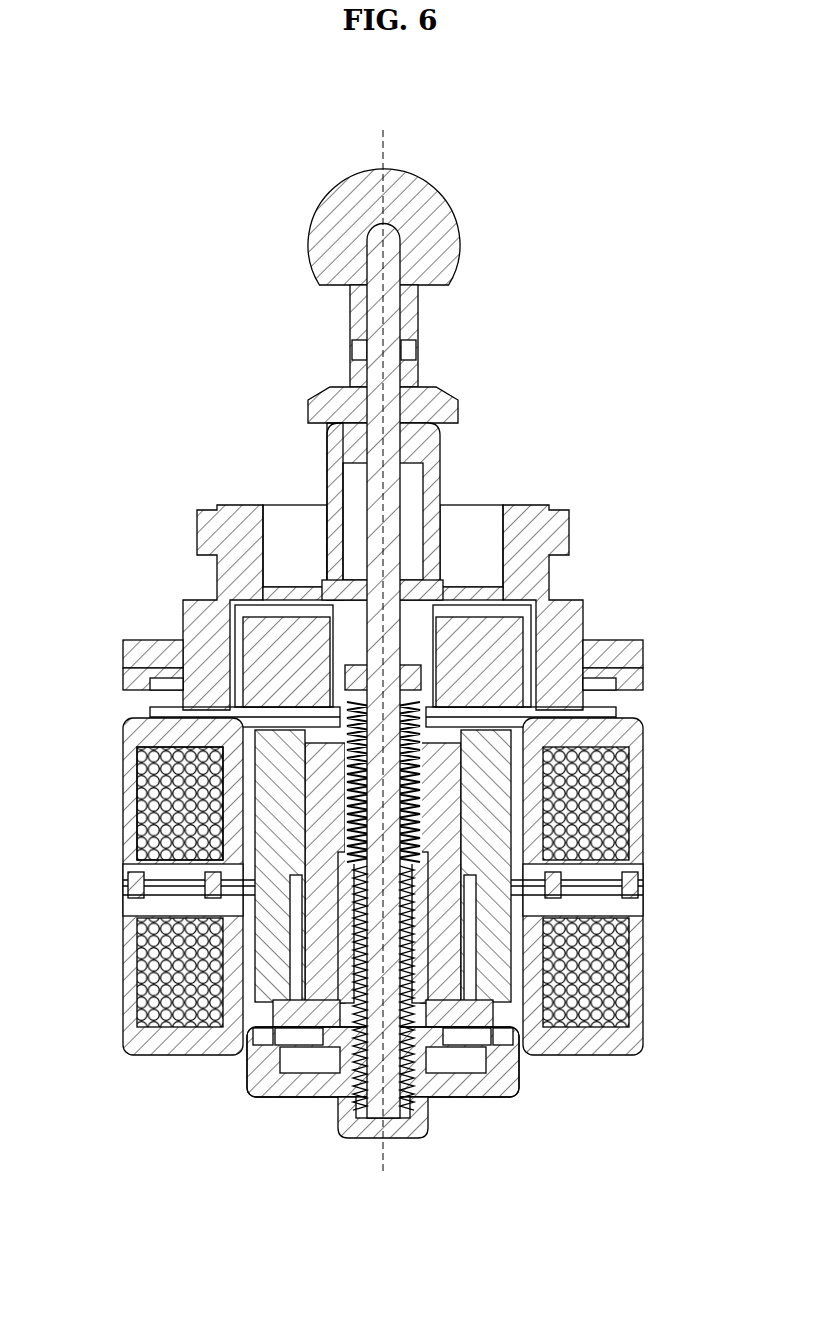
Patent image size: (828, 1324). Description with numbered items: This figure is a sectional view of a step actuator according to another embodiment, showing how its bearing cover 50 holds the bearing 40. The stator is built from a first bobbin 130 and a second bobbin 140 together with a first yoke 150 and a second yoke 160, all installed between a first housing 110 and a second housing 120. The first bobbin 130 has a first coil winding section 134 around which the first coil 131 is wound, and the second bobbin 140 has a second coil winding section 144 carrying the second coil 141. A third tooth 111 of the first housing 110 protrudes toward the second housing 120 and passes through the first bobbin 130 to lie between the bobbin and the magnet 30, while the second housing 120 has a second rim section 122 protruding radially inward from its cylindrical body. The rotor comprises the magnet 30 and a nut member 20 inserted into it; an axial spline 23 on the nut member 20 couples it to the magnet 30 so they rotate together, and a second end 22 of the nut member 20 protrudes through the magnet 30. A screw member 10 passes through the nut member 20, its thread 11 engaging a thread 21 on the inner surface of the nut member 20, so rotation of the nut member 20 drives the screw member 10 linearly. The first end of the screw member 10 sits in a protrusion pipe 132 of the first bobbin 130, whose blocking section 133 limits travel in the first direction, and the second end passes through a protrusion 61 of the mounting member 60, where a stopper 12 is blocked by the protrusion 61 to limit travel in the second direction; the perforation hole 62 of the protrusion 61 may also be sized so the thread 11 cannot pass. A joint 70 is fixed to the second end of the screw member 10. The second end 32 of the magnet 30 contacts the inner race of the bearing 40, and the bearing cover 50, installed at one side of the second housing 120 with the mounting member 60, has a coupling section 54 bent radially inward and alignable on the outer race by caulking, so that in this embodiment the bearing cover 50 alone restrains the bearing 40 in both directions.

The screw member 10 is at (450, 384).
The thread 11 is at (433, 1100).
The stopper 12 is at (345, 675).
The nut member 20 is at (610, 768).
The thread 21 is at (590, 720).
The second end 22 is at (535, 615).
The spline 23 is at (640, 990).
The magnet 30 is at (610, 808).
The second end 32 is at (150, 693).
The bearing 40 is at (170, 640).
The bearing cover 50 is at (600, 642).
The coupling section 54 is at (600, 688).
The mounting member 60 is at (527, 513).
The protrusion 61 is at (427, 447).
The perforation hole 62 is at (330, 440).
The joint 70 is at (325, 278).
The first housing 110 is at (125, 965).
The third tooth 111 is at (640, 1028).
The second housing 120 is at (140, 810).
The second rim section 122 is at (150, 745).
The first bobbin 130 is at (130, 912).
The first coil 131 is at (130, 1010).
The protrusion pipe 132 is at (480, 1100).
The blocking section 133 is at (398, 1146).
The first coil winding section 134 is at (640, 945).
The second bobbin 140 is at (140, 850).
The second coil 141 is at (150, 780).
The second coil winding section 144 is at (640, 835).
The first yoke 150 is at (130, 893).
The second yoke 160 is at (130, 880).